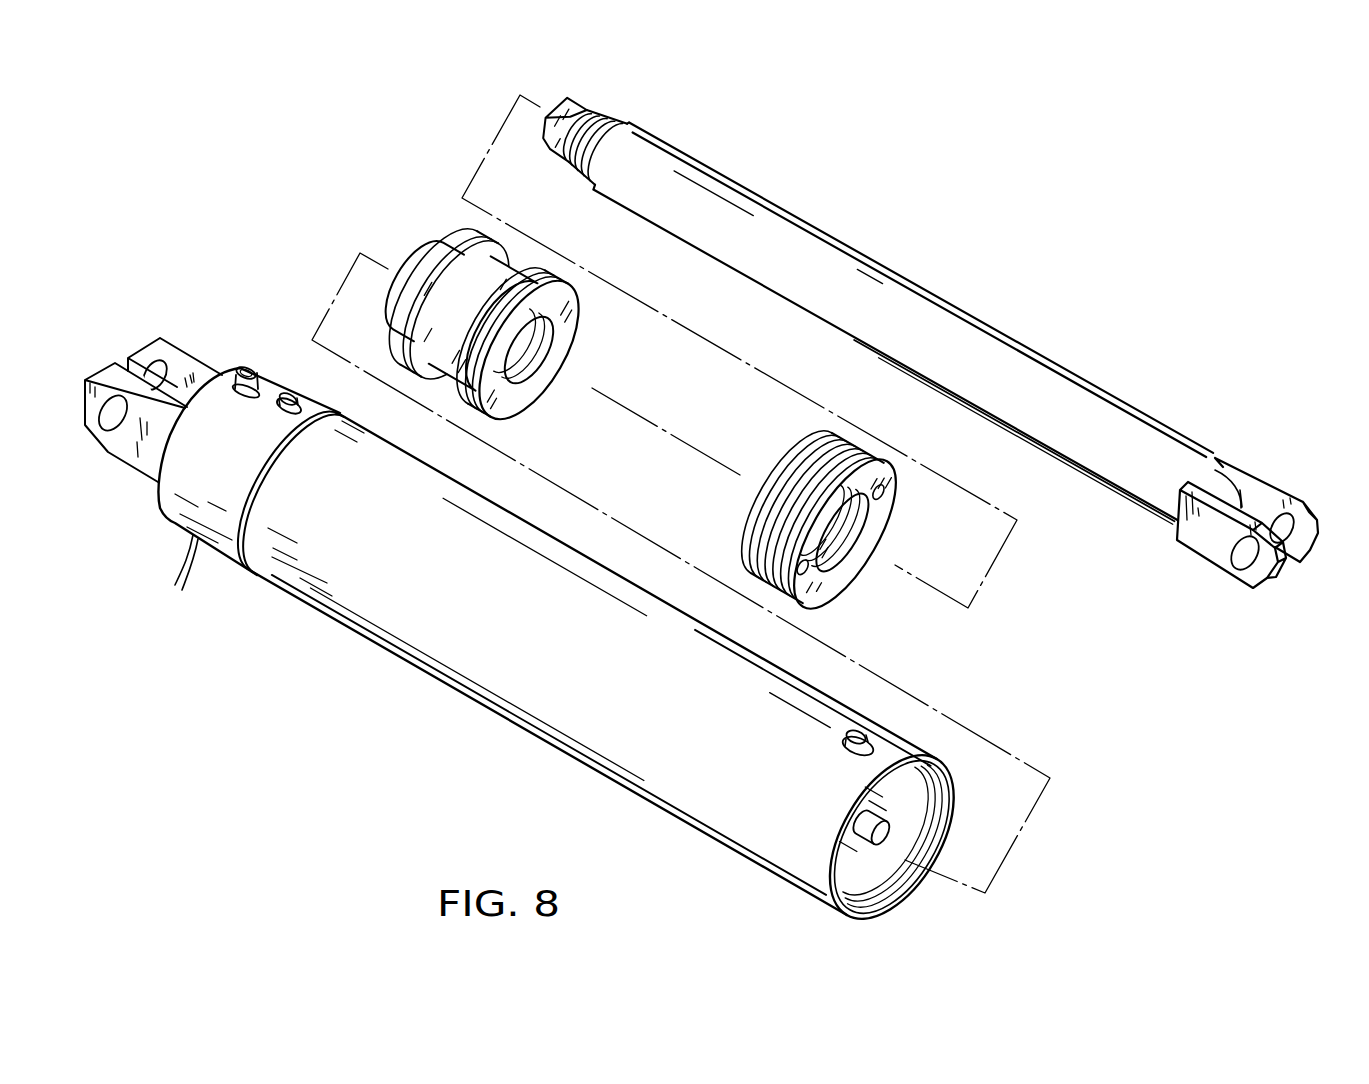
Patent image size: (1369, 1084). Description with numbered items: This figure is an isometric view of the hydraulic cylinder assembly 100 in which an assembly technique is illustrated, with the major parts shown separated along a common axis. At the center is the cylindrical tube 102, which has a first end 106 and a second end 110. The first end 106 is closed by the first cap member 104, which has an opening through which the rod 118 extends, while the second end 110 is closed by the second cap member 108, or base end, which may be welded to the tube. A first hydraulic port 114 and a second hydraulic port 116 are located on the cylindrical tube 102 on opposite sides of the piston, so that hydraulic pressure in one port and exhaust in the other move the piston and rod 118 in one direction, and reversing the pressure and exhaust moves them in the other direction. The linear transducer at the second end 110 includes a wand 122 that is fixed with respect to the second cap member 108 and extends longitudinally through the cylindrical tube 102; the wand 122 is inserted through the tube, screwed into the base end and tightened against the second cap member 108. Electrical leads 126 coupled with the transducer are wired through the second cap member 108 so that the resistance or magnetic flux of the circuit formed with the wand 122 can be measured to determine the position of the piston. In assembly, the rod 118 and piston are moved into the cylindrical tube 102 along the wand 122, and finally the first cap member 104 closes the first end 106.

The hydraulic cylinder assembly 100 is at (1084, 224).
The cylindrical tube 102 is at (497, 682).
The first cap member 104 is at (836, 600).
The first end 106 is at (760, 835).
The second cap member 108 is at (213, 395).
The second end 110 is at (318, 592).
The first hydraulic port 114 is at (870, 738).
The second hydraulic port 116 is at (284, 400).
The rod 118 is at (1042, 380).
The wand 122 is at (895, 787).
The electrical leads 126 is at (200, 577).